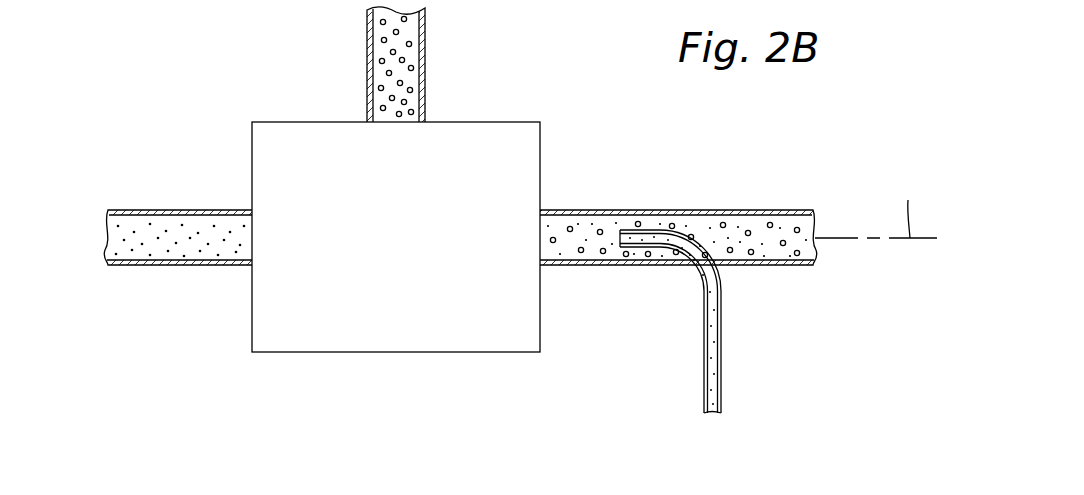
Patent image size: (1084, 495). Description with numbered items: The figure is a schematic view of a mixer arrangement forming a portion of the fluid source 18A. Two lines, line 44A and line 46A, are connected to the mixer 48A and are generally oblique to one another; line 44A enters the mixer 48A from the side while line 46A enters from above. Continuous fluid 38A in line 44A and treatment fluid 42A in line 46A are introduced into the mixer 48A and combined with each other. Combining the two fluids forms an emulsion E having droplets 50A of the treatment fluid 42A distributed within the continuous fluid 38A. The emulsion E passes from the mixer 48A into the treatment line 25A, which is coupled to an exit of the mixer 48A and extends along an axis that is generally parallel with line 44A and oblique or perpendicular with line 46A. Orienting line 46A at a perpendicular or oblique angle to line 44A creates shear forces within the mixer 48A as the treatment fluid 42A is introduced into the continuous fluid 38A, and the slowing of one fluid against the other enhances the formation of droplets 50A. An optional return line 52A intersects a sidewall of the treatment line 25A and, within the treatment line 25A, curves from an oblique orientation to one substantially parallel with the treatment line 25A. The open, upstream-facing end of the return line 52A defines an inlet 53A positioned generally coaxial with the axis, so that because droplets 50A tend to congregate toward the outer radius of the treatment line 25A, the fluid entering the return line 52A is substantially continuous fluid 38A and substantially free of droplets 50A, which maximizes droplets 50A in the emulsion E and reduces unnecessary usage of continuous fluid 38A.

The fluid source 18A is at (172, 41).
The mixer 48A is at (345, 352).
The line 46A is at (425, 68).
The treatment fluid 42A is at (377, 66).
The line 44A is at (160, 210).
The continuous fluid 38A is at (160, 252).
The droplets 50A is at (678, 210).
The treatment line 25A is at (614, 218).
The emulsion E is at (787, 228).
The return line 52A is at (721, 365).
The inlet 53A is at (612, 242).